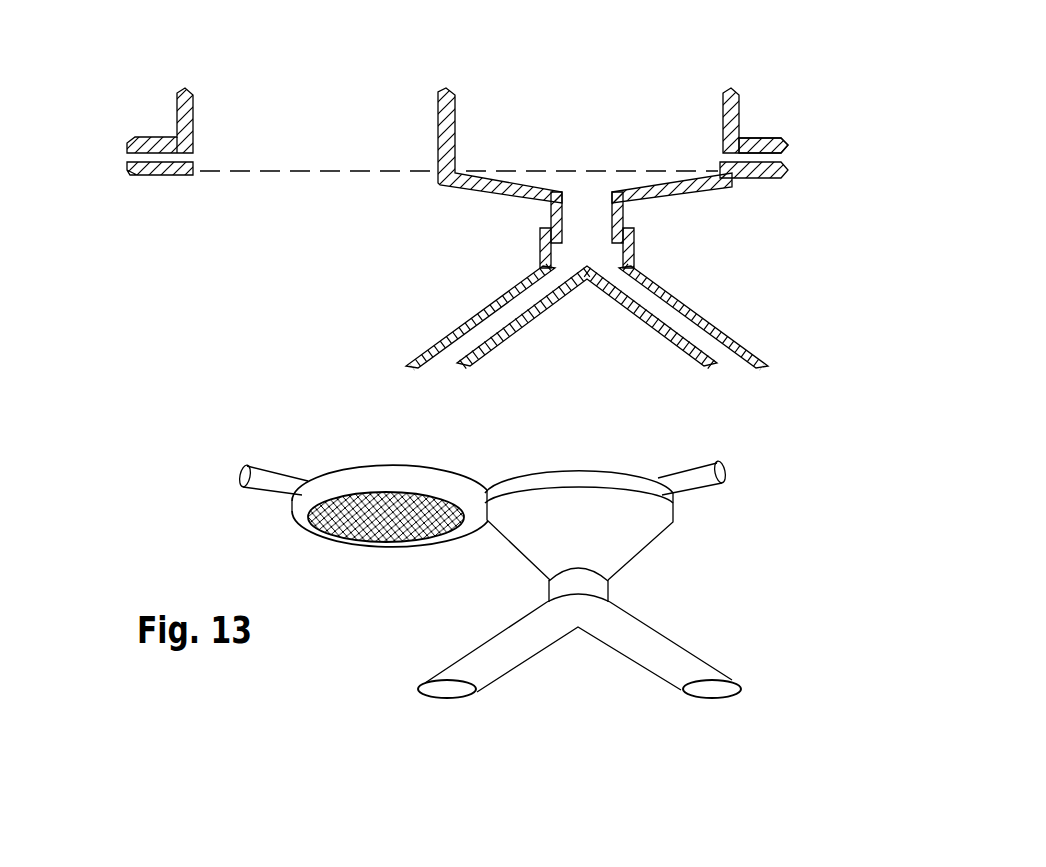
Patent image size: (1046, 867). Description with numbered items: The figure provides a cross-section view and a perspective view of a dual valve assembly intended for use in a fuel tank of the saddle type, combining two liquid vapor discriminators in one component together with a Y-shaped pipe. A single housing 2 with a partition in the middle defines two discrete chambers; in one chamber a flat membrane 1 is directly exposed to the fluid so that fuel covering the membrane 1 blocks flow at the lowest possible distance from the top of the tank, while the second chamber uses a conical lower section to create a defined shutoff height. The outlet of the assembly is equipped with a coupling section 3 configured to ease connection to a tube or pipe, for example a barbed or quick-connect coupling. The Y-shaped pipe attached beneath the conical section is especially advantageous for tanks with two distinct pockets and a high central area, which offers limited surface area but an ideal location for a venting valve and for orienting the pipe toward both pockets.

The membrane 1 is at (581, 164).
The housing 2 is at (715, 81).
The coupling section 3 is at (748, 147).